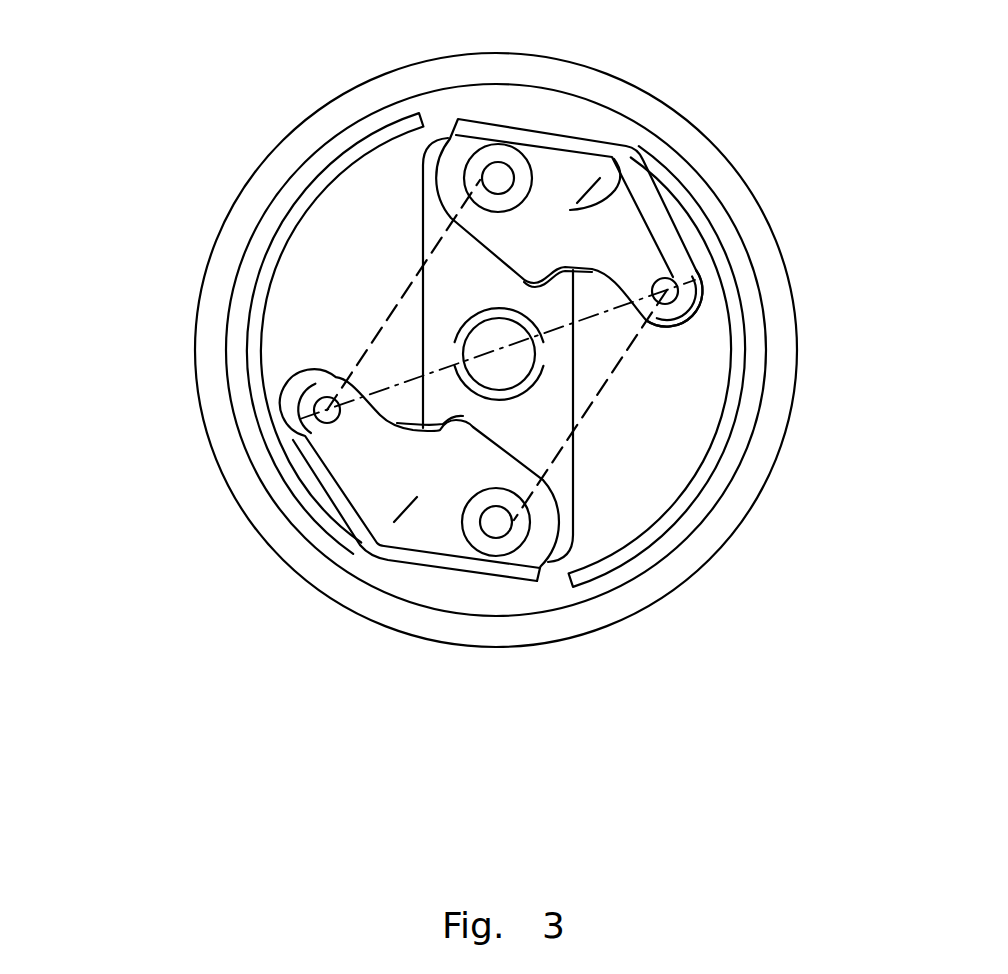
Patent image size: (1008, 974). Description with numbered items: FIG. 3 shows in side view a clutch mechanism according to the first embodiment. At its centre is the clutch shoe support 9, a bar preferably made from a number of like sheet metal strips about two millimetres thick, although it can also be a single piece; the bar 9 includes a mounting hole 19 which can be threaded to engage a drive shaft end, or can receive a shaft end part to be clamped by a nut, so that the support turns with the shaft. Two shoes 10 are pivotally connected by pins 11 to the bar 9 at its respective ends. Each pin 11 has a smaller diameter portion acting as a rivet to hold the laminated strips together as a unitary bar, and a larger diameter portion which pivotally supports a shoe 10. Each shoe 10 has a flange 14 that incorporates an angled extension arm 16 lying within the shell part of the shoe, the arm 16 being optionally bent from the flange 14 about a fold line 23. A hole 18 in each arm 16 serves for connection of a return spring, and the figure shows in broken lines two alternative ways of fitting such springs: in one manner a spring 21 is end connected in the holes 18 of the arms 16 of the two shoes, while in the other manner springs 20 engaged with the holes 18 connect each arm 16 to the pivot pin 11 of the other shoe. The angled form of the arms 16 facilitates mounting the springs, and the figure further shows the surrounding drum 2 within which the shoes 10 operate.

The brake drum housing 2 is at (553, 80).
The clutch shoe support 9 is at (560, 382).
The shoe 10 is at (712, 214).
The pin 11 is at (484, 178).
The flange 14 is at (560, 183).
The angled extension arm 16 is at (638, 228).
The hole 18 is at (680, 282).
The mounting hole 19 is at (455, 344).
The spring 20 is at (583, 413).
The spring 21 is at (612, 314).
The fold line 23 is at (610, 200).